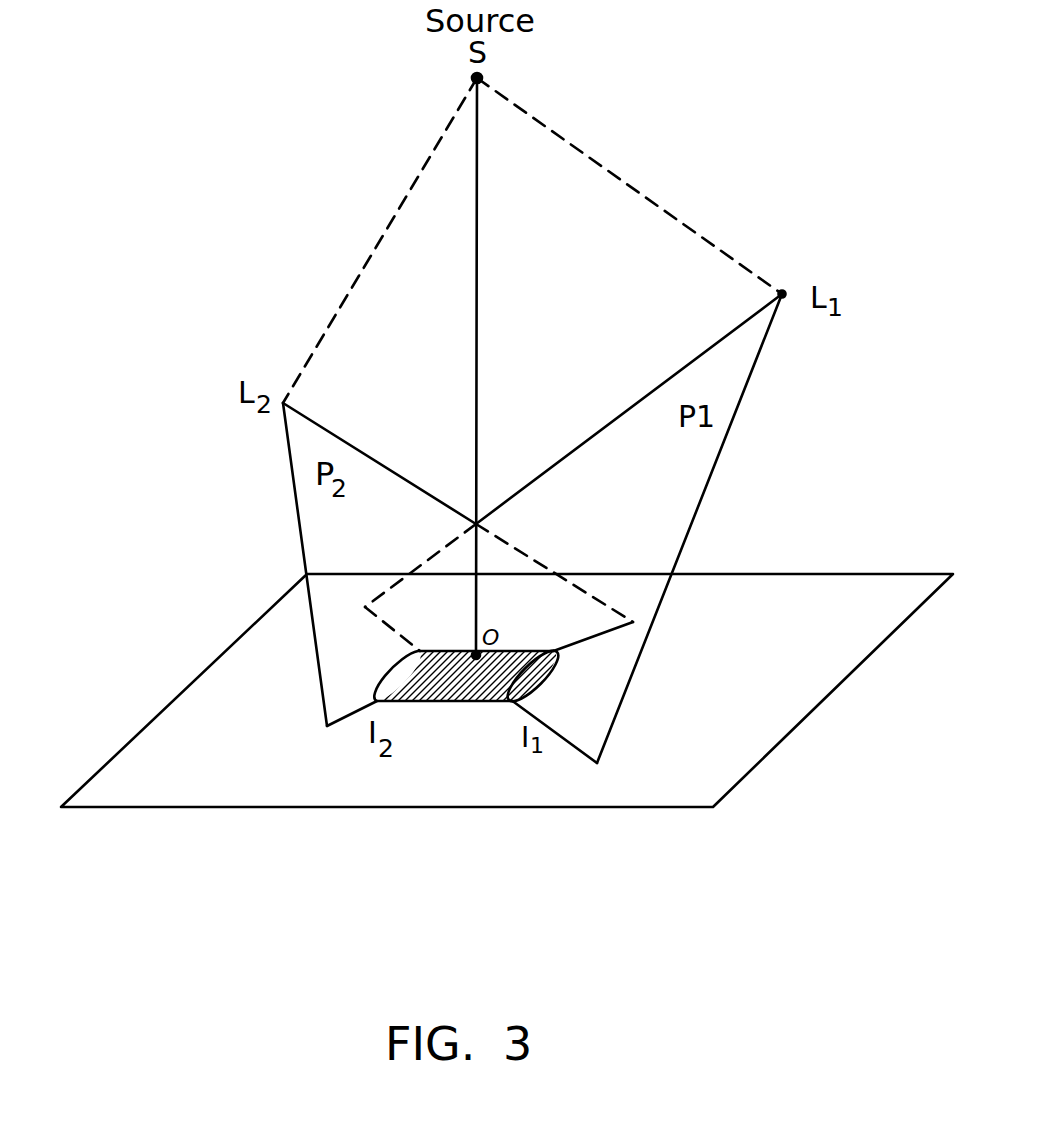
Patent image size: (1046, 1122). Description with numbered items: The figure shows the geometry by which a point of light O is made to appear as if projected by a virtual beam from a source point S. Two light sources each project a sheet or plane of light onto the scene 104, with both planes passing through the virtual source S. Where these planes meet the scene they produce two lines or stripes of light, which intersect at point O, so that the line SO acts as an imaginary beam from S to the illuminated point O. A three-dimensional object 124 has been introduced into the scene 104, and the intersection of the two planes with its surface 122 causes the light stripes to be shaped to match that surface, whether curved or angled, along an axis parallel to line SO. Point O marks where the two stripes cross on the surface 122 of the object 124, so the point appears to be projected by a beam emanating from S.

The scene 104 is at (797, 700).
The surface 122 is at (532, 650).
The three-dimensional object 124 is at (548, 677).